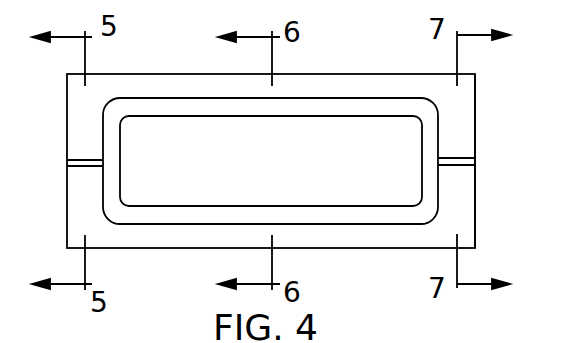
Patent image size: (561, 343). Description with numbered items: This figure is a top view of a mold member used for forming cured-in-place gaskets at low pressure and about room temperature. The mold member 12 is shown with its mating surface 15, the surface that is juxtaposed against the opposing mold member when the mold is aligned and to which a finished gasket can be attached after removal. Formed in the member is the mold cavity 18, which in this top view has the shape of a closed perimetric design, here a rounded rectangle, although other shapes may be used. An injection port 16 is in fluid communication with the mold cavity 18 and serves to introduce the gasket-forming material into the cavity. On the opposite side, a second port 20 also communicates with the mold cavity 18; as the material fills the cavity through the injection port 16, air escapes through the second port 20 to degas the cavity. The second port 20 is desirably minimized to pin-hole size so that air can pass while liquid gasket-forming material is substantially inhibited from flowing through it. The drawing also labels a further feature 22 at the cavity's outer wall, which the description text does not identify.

The upper mold member 12 is at (327, 74).
The mating surface 15 is at (460, 115).
The injection port 16 is at (70, 161).
The mold cavity 18 is at (257, 107).
The second port 20 is at (462, 162).
The raised rim wall 22 is at (438, 193).